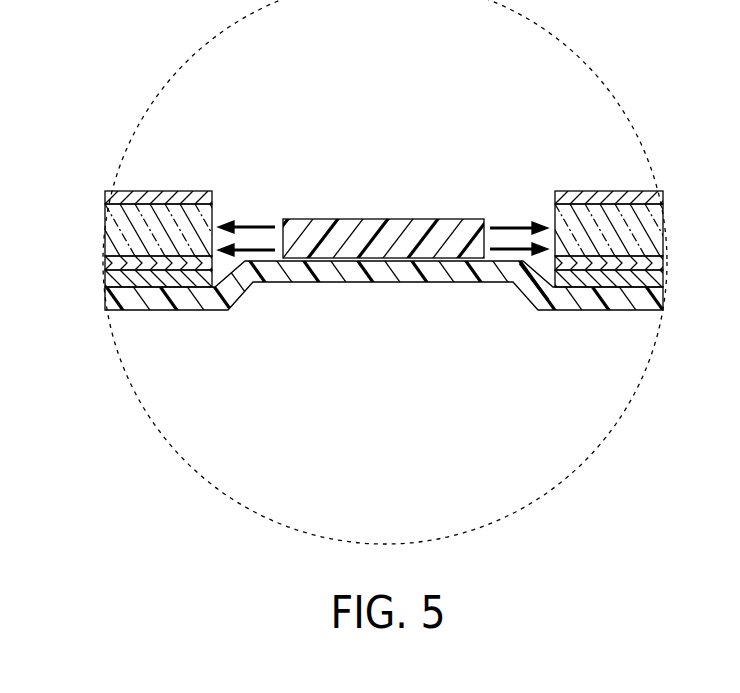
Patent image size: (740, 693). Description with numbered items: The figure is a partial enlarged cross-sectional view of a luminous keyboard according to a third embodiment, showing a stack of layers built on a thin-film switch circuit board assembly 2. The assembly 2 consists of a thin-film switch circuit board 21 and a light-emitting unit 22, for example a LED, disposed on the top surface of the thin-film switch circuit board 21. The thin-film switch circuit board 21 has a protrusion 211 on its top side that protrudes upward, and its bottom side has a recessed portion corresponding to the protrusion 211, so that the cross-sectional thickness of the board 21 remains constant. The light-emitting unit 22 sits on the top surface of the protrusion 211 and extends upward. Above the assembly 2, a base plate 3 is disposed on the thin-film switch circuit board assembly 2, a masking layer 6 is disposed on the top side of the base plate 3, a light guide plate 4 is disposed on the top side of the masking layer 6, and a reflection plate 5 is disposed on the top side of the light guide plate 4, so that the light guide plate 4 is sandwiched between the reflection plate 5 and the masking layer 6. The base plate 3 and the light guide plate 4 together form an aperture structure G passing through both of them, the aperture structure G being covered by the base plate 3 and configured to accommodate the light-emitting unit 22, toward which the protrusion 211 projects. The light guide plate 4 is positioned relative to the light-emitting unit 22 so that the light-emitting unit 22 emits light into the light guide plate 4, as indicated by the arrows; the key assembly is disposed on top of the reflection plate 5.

The thin-film switch circuit board assembly 2 is at (388, 317).
The thin-film switch circuit board 21 is at (200, 297).
The protrusion 211 is at (551, 268).
The light-emitting unit 22 is at (305, 242).
The base plate 3 is at (107, 280).
The light guide plate 4 is at (107, 225).
The reflection plate 5 is at (113, 195).
The masking layer 6 is at (107, 263).
The aperture structure G is at (267, 208).